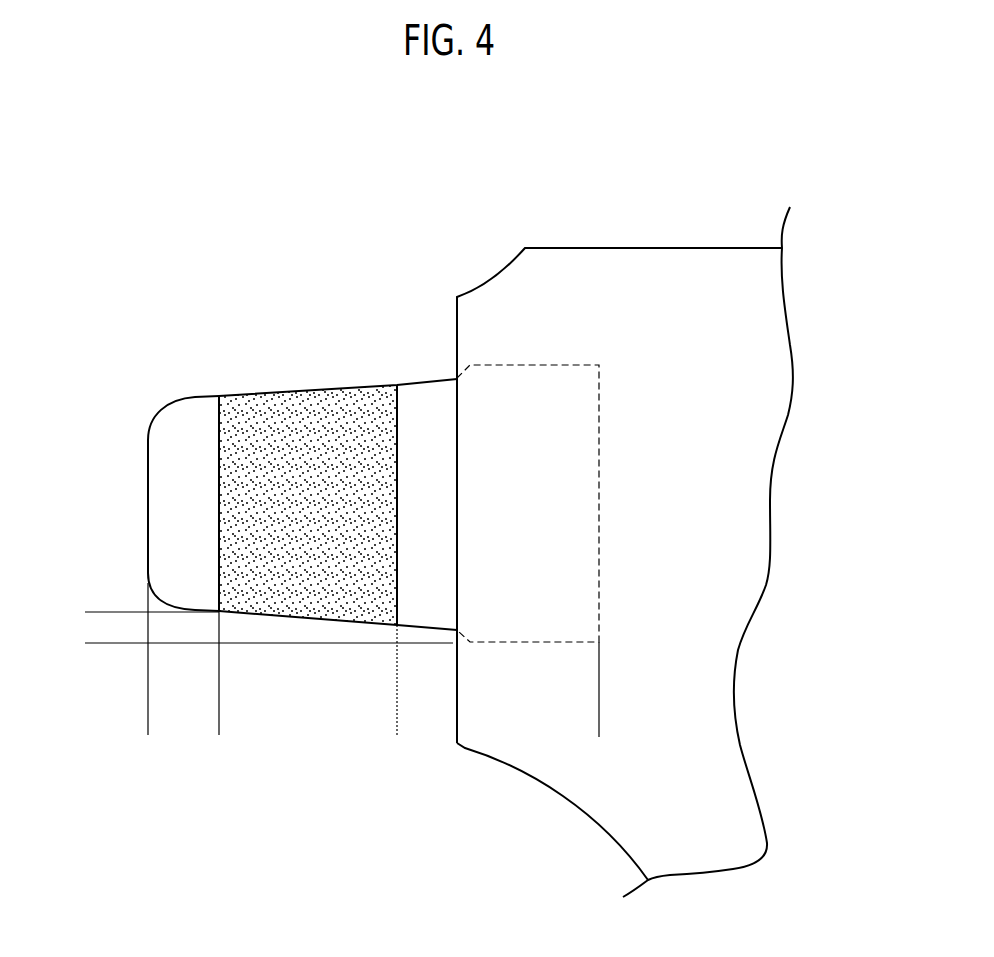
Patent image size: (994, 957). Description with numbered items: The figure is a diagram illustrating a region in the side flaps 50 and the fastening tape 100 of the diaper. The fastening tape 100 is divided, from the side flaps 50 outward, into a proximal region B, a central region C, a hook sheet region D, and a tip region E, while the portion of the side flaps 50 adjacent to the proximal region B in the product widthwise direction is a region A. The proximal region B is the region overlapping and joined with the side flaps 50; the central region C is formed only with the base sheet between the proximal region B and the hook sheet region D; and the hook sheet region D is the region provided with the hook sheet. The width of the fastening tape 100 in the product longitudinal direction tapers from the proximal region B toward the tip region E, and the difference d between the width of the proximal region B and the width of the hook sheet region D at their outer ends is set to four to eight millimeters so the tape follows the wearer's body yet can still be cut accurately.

The side flaps 50 is at (693, 267).
The fastening tape 100 is at (349, 341).
The region A is at (560, 503).
The proximal region B is at (599, 721).
The central region C is at (457, 721).
The hook sheet region D is at (397, 721).
The tip region E is at (219, 721).
The difference in width d is at (96, 580).